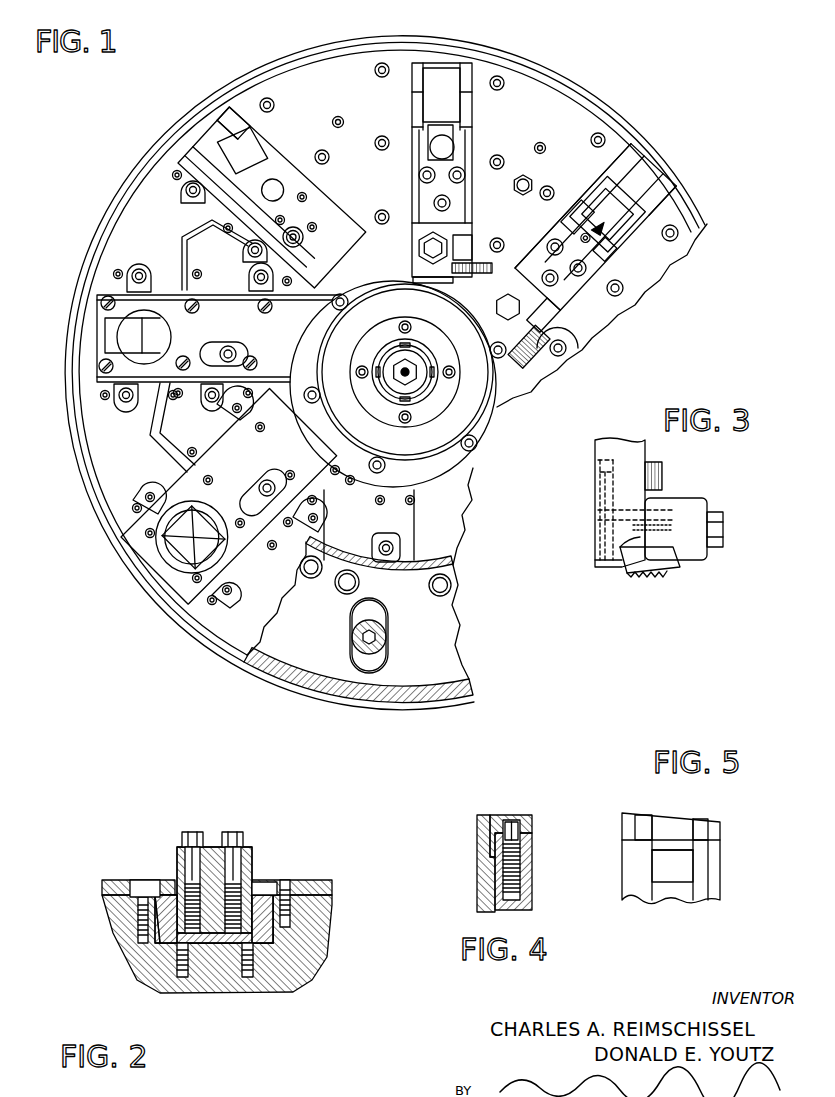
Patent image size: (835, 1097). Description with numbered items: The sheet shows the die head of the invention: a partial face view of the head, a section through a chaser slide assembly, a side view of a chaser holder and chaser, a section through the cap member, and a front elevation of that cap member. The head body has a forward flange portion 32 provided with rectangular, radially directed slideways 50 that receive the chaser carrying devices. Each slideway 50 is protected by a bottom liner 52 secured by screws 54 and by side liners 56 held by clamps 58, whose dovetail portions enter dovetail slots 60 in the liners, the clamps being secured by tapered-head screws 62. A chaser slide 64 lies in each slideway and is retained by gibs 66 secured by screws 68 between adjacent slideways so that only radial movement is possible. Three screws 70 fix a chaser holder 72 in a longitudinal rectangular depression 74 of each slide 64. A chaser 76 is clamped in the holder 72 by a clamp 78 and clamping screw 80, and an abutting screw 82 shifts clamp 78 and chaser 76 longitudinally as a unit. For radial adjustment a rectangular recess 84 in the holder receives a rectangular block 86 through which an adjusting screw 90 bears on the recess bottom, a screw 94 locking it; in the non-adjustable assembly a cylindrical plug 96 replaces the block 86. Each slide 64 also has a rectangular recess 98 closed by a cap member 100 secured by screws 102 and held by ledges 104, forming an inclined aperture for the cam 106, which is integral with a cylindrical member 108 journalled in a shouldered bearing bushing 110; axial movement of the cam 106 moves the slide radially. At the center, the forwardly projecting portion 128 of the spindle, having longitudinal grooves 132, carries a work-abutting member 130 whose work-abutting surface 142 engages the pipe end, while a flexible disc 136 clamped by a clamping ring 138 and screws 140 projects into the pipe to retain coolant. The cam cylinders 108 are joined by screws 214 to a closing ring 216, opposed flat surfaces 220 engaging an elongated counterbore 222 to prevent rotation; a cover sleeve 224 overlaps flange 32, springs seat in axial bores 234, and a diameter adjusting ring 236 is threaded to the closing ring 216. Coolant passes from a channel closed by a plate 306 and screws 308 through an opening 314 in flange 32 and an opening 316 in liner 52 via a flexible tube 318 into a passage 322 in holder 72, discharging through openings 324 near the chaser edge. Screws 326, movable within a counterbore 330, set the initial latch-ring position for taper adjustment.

In FIG. 1, the forward flange portion 32 is at (120, 480).
In FIG. 2, the forward flange portion 32 is at (283, 975).
In FIG. 1, the slideways 50 is at (650, 182).
In FIG. 2, the slideways 50 is at (275, 930).
In FIG. 1, the liner 52 is at (257, 316).
In FIG. 2, the liner 52 is at (185, 977).
In FIG. 1, the screws 54 is at (183, 360).
In FIG. 2, the screws 54 is at (248, 977).
In FIG. 1, the side liners 56 is at (243, 231).
In FIG. 2, the side liners 56 is at (270, 882).
In FIG. 1, the clamps 58 is at (258, 268).
In FIG. 2, the clamps 58 is at (137, 880).
In FIG. 1, the dovetail slots 60 is at (132, 335).
In FIG. 2, the dovetail slots 60 is at (135, 918).
In FIG. 1, the screws 62 is at (138, 268).
In FIG. 2, the screws 62 is at (136, 906).
In FIG. 1, the chaser slide 64 is at (640, 226).
In FIG. 2, the chaser slide 64 is at (218, 946).
In FIG. 4, the chaser slide 64 is at (532, 900).
In FIG. 5, the chaser slide 64 is at (679, 893).
In FIG. 1, the gibs 66 is at (297, 83).
In FIG. 2, the gibs 66 is at (108, 878).
In FIG. 4, the gibs 66 is at (482, 876).
In FIG. 1, the screws 68 is at (320, 152).
In FIG. 2, the screws 68 is at (288, 881).
In FIG. 1, the screws 70 is at (450, 203).
In FIG. 3, the screws 70 is at (655, 470).
In FIG. 2, the screws 70 is at (190, 832).
In FIG. 1, the chaser holder 72 is at (462, 207).
In FIG. 3, the chaser holder 72 is at (615, 440).
In FIG. 2, the chaser holder 72 is at (213, 847).
In FIG. 1, the longitudinal rectangular depression 74 is at (310, 243).
In FIG. 2, the longitudinal rectangular depression 74 is at (257, 890).
In FIG. 1, the chaser 76 is at (536, 391).
In FIG. 3, the chaser 76 is at (667, 557).
In FIG. 1, the clamp 78 is at (428, 224).
In FIG. 3, the clamp 78 is at (695, 500).
In FIG. 1, the clamping screw 80 is at (510, 294).
In FIG. 3, the clamping screw 80 is at (722, 527).
In FIG. 1, the abutting screw 82 is at (572, 348).
In FIG. 1, the rectangular recess 84 is at (432, 130).
In FIG. 1, the rectangular block 86 is at (598, 252).
In FIG. 1, the adjusting screw 90 is at (602, 218).
In FIG. 1, the screw 94 is at (580, 236).
In FIG. 1, the cylindrical plug 96 is at (448, 147).
In FIG. 5, the rectangular recess 98 is at (688, 866).
In FIG. 1, the cap member 100 is at (220, 143).
In FIG. 4, the cap member 100 is at (534, 820).
In FIG. 5, the cap member 100 is at (676, 825).
In FIG. 4, the screws 102 is at (532, 868).
In FIG. 1, the ledges 104 is at (420, 88).
In FIG. 5, the ledges 104 is at (641, 815).
In FIG. 1, the cam 106 is at (628, 176).
In FIG. 1, the cylindrical member 108 is at (125, 318).
In FIG. 1, the shouldered bearing bushing 110 is at (158, 542).
In FIG. 1, the forwardly projecting portion 128 is at (418, 357).
In FIG. 1, the work-abutting member 130 is at (390, 393).
In FIG. 1, the longitudinal grooves 132 is at (405, 343).
In FIG. 1, the disc 136 is at (410, 455).
In FIG. 1, the clamping ring 138 is at (414, 420).
In FIG. 1, the screws 140 is at (449, 379).
In FIG. 1, the work-abutting surface 142 is at (447, 448).
In FIG. 1, the screws 214 is at (376, 645).
In FIG. 1, the closing ring 216 is at (466, 655).
In FIG. 1, the flat surfaces 220 is at (382, 634).
In FIG. 1, the elongated counterbore 222 is at (388, 602).
In FIG. 1, the cover sleeve 224 is at (317, 58).
In FIG. 1, the axial bores 234 is at (452, 587).
In FIG. 1, the diameter adjusting ring 236 is at (521, 54).
In FIG. 1, the plate 306 is at (332, 465).
In FIG. 1, the screws 308 is at (376, 474).
In FIG. 1, the opening 314 is at (267, 473).
In FIG. 1, the opening 316 is at (246, 352).
In FIG. 1, the flexible tube 318 is at (300, 228).
In FIG. 3, the passage 322 is at (603, 493).
In FIG. 3, the openings 324 is at (646, 557).
In FIG. 1, the screws 326 is at (517, 181).
In FIG. 1, the counterbore 330 is at (309, 579).